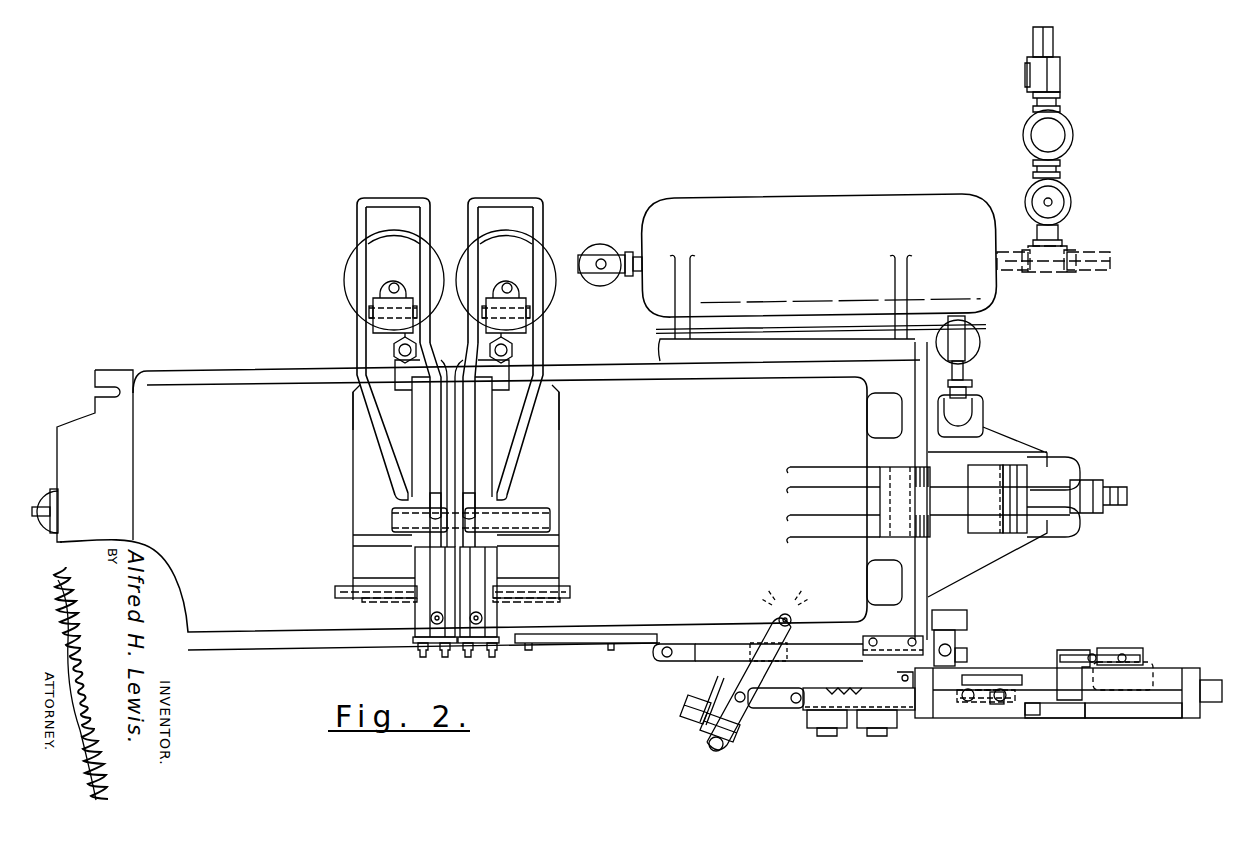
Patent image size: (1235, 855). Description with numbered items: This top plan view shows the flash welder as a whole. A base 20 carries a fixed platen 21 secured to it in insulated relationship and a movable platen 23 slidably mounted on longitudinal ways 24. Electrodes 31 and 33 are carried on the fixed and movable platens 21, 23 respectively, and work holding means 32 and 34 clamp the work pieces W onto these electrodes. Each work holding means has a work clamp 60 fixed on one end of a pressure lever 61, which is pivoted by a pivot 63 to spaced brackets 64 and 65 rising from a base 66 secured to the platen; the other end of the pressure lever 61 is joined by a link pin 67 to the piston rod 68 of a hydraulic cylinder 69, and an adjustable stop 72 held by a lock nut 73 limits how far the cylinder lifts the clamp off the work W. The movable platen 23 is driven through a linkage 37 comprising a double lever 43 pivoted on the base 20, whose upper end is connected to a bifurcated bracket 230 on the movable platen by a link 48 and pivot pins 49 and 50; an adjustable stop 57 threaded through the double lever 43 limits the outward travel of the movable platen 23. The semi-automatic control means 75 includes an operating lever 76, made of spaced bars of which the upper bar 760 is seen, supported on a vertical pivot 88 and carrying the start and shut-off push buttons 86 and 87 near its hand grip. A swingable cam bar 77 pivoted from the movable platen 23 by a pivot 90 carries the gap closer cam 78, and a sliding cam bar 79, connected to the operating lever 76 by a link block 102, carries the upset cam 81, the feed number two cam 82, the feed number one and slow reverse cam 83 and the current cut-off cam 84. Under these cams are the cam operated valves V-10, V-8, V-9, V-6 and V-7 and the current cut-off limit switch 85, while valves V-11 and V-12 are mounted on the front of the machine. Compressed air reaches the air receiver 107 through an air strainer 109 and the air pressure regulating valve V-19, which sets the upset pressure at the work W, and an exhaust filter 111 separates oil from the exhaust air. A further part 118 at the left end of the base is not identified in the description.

The base 20 is at (97, 368).
The fixed platen 21 is at (236, 384).
The movable platen 23 is at (615, 380).
The longitudinal ways 24 is at (867, 418).
The electrode 31 is at (415, 619).
The work holding means 32 is at (349, 490).
The electrode 33 is at (497, 614).
The work holding means 34 is at (546, 473).
The linkage 37 is at (1020, 467).
The double lever 43 is at (1066, 540).
The link 48 is at (970, 528).
The pivot pin 49 is at (1000, 540).
The pivot pin 50 is at (897, 467).
The adjustable stop 57 is at (1105, 482).
The work clamp 60 is at (417, 648).
The pressure lever 61 is at (428, 400).
The pivot 63 is at (392, 520).
The spaced bracket 64 is at (353, 414).
The spaced bracket 65 is at (420, 380).
The base 66 is at (353, 439).
The link pin 67 is at (369, 330).
The piston rod 68 is at (396, 288).
The hydraulic cylinder 69 is at (346, 262).
The adjustable stop 72 is at (394, 350).
The lock nut 73 is at (416, 343).
The control means 75 is at (696, 685).
The operating lever 76 is at (724, 752).
The swingable cam bar 77 is at (725, 648).
The gap closer cam 78 is at (893, 636).
The sliding cam bar 79 is at (1202, 680).
The upset cam 81 is at (960, 718).
The feed No. 2 cam 82 is at (970, 672).
The feed No. 1 and slow reverse cam 83 is at (1080, 700).
The current cut-off cam 84 is at (1100, 655).
The current cut-off limit switch 85 is at (1126, 648).
The start push button 86 is at (700, 718).
The shut-off push button 87 is at (683, 739).
The pivot 88 is at (796, 618).
The pivot 90 is at (660, 652).
The link block 102 is at (768, 694).
The air receiver 107 is at (760, 198).
The air strainer 109 is at (1060, 135).
The exhaust filter 111 is at (980, 342).
The plunger 118 is at (50, 533).
The bifurcated bracket 230 is at (836, 516).
The upper bar 760 is at (730, 712).
The work pieces W is at (335, 591).
The cam operated valve V-6 is at (1040, 718).
The cam operated valve V-7 is at (1098, 718).
The cam operated valve V-8 is at (977, 690).
The cam operated valve V-9 is at (996, 718).
The cam operated valve V-10 is at (962, 630).
The control valve V-11 is at (812, 729).
The control valve V-12 is at (861, 730).
The air pressure regulating valve V-19 is at (1058, 203).